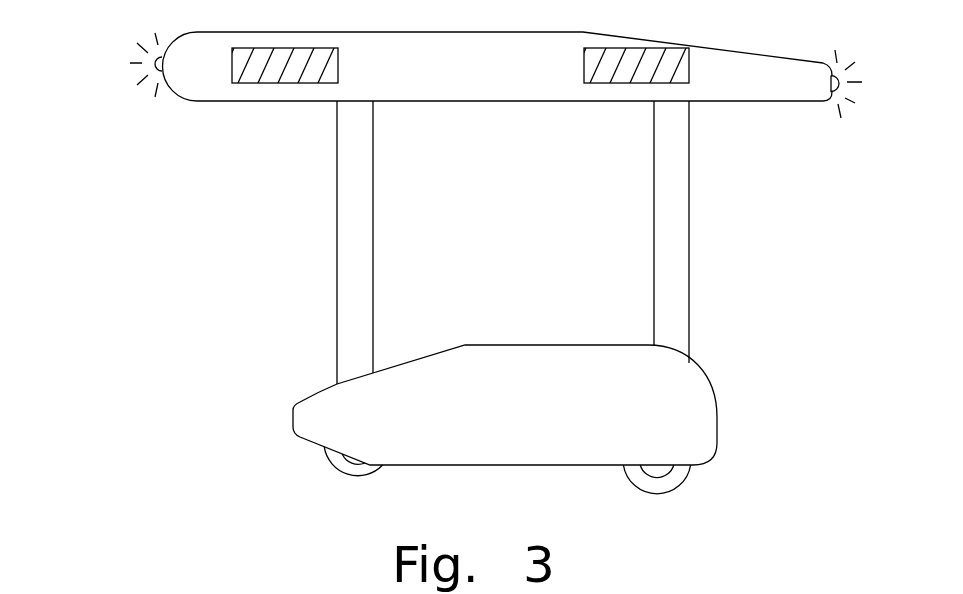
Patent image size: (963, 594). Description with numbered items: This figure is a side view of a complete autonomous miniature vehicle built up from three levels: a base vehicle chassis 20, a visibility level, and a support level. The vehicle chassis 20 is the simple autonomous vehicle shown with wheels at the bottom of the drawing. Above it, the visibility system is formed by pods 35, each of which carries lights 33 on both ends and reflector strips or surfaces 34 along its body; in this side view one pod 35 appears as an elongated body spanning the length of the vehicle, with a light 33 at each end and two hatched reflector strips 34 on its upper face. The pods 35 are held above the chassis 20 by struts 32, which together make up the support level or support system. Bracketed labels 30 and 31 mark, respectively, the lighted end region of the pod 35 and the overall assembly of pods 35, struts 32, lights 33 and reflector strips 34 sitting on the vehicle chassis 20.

The vehicle chassis 20 is at (268, 506).
The lighting unit 30 is at (126, 102).
The airship canopy assembly 31 is at (93, 401).
The struts 32 is at (373, 267).
The lights 33 is at (153, 73).
The reflector strips 34 is at (308, 82).
The pods 35 is at (443, 101).